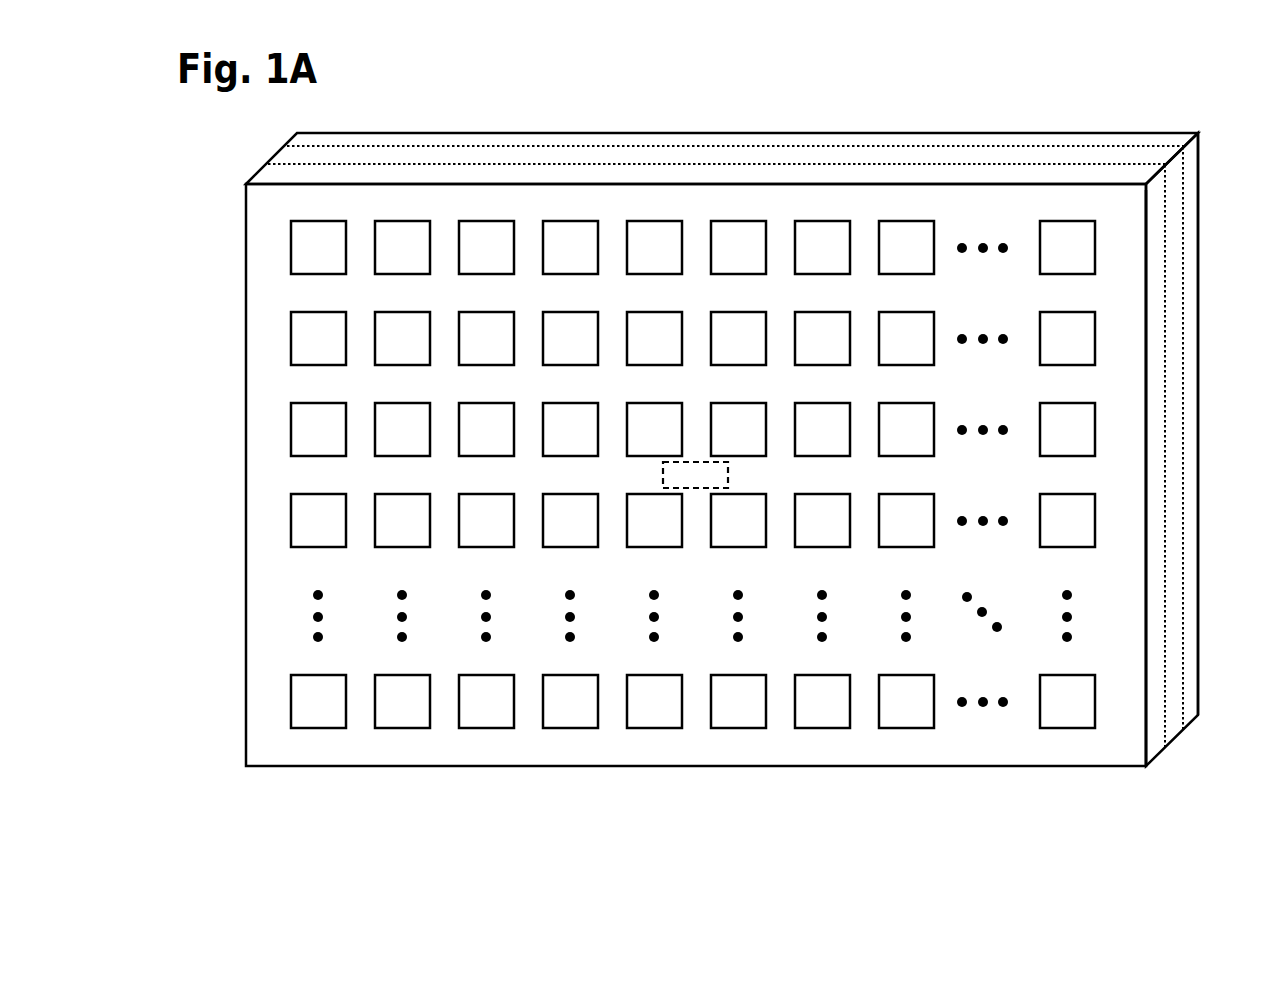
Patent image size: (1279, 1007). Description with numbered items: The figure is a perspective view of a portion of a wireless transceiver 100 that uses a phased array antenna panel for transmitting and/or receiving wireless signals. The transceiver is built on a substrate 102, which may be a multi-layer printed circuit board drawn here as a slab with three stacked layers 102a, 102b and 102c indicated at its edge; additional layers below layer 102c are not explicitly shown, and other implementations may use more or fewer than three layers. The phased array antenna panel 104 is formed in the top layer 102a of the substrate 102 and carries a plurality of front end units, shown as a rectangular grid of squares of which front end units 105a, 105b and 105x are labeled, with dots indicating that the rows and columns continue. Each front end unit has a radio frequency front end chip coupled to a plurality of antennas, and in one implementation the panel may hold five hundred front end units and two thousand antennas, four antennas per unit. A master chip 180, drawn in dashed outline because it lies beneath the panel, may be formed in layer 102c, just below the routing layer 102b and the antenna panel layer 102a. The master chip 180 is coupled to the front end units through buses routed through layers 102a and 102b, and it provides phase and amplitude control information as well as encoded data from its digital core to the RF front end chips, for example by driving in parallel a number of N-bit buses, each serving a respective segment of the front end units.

The wireless transceiver 100 is at (1134, 111).
The substrate 102 is at (1217, 481).
The layer 102a is at (1166, 495).
The layer 102b is at (741, 471).
The layer 102c is at (761, 451).
The phased array antenna panel 104 is at (713, 756).
The front end unit 105a is at (300, 235).
The front end unit 105b is at (385, 235).
The front end unit 105x is at (1048, 714).
The master chip 180 is at (713, 486).